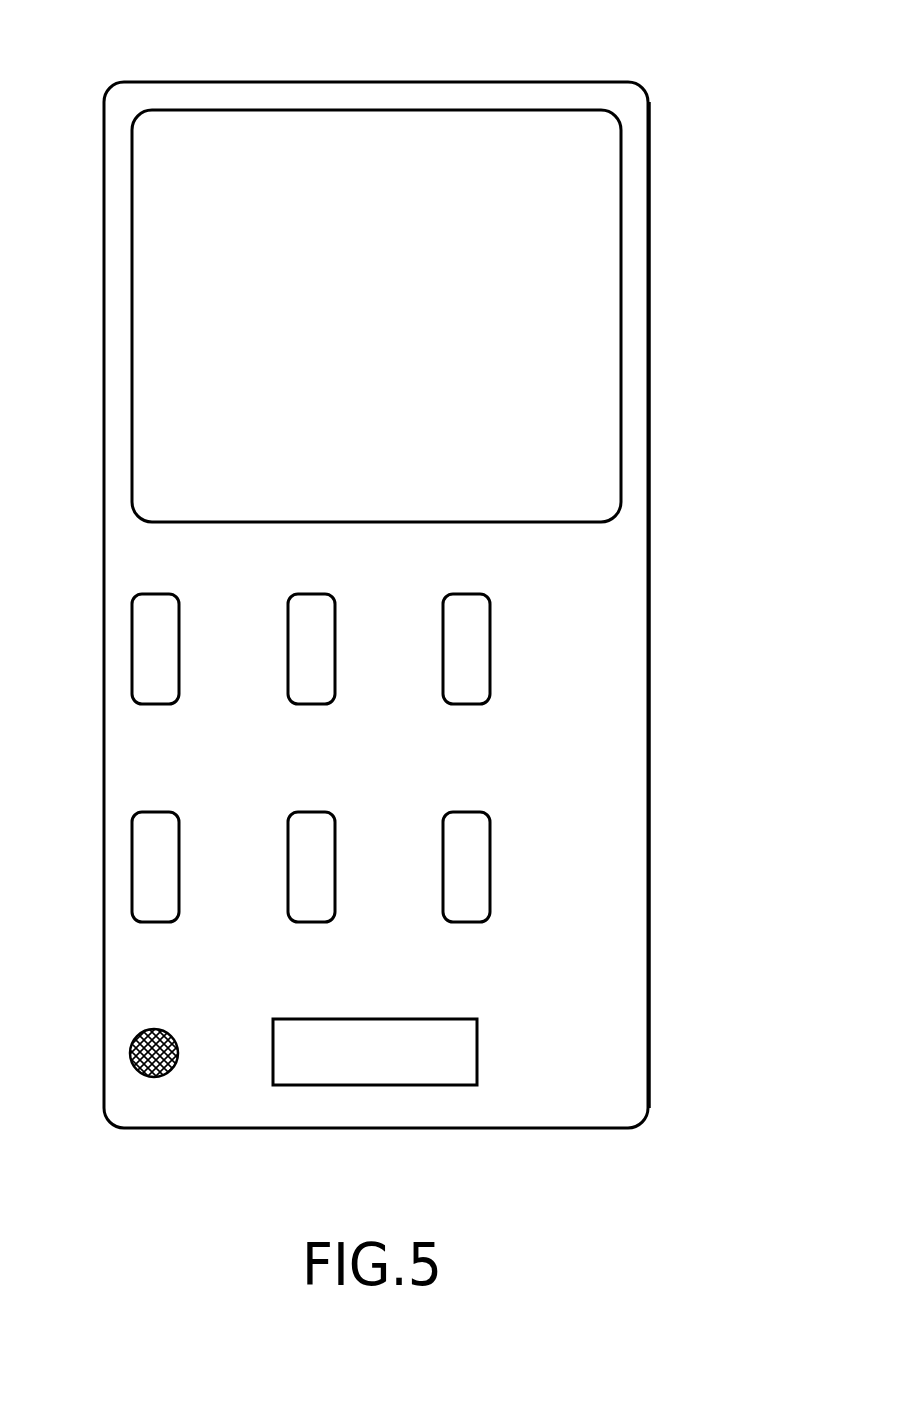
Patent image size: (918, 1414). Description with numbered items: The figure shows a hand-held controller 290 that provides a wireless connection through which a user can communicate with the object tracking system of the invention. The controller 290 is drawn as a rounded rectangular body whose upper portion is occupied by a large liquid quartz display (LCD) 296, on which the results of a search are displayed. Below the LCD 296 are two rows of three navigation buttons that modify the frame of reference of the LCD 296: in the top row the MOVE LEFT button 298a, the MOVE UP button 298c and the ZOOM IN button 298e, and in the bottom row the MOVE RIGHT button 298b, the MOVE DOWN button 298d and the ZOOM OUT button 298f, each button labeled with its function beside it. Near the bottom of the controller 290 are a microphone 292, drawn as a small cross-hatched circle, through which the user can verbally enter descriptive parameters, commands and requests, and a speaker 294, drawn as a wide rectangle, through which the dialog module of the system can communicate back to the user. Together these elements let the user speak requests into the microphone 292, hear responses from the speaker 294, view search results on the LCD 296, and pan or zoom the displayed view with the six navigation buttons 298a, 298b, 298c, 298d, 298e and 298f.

The hand-held controller 290 is at (106, 92).
The microphone 292 is at (142, 1057).
The speaker 294 is at (430, 1085).
The liquid quartz display (LCD) 296 is at (584, 167).
The MOVE LEFT navigation button 298a is at (155, 594).
The MOVE RIGHT navigation button 298b is at (155, 812).
The MOVE UP navigation button 298c is at (311, 594).
The MOVE DOWN navigation button 298d is at (311, 812).
The ZOOM IN navigation button 298e is at (467, 594).
The ZOOM OUT navigation button 298f is at (467, 812).